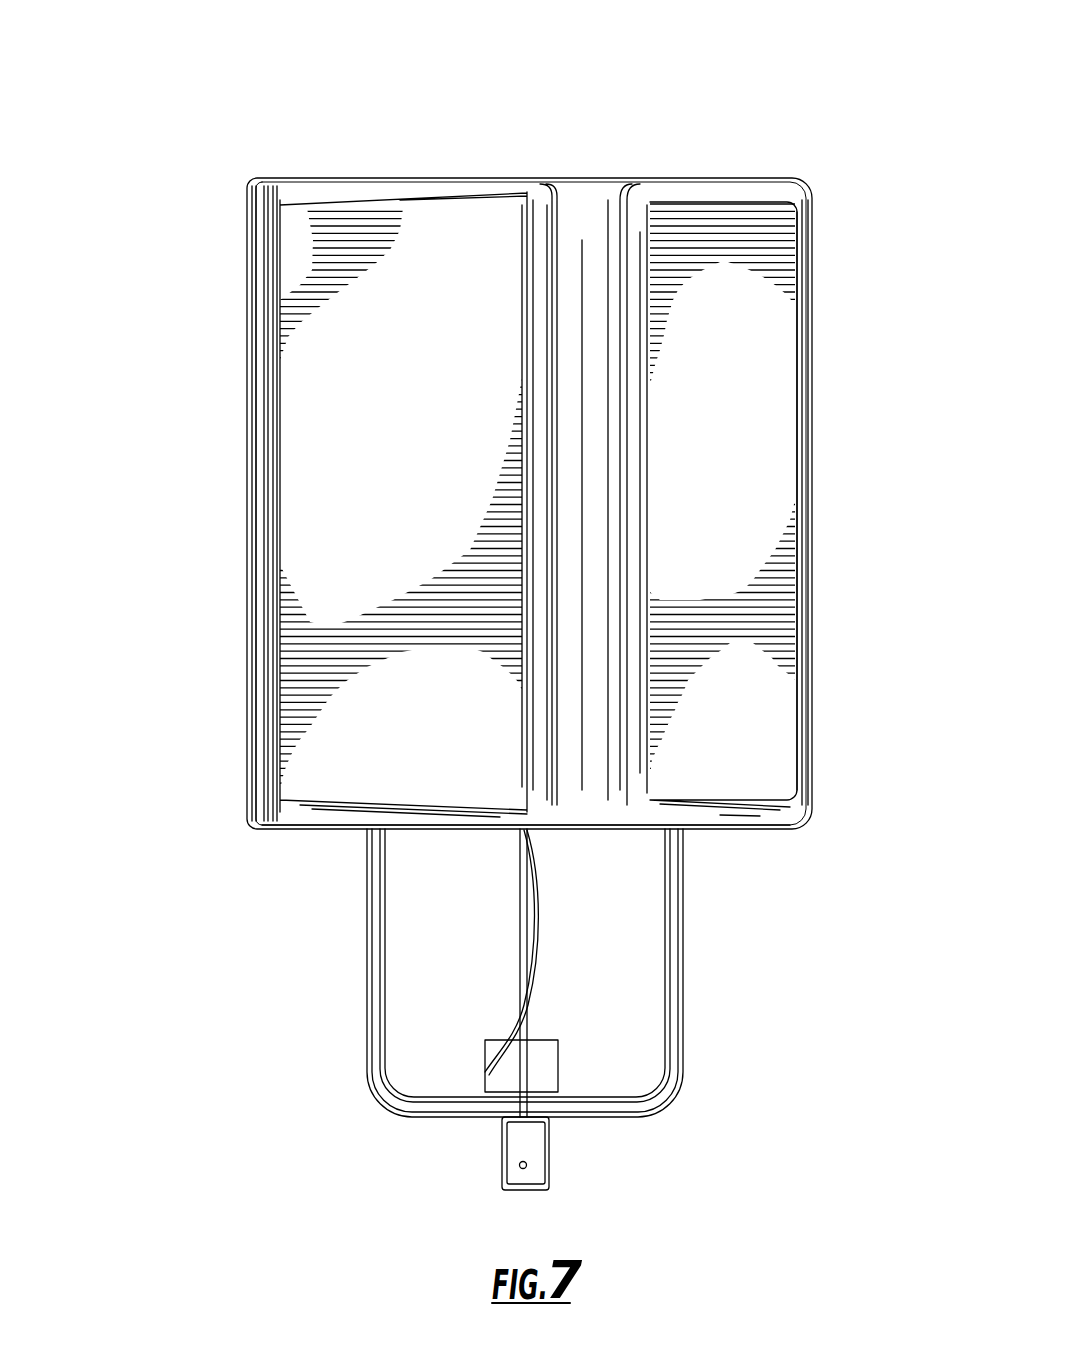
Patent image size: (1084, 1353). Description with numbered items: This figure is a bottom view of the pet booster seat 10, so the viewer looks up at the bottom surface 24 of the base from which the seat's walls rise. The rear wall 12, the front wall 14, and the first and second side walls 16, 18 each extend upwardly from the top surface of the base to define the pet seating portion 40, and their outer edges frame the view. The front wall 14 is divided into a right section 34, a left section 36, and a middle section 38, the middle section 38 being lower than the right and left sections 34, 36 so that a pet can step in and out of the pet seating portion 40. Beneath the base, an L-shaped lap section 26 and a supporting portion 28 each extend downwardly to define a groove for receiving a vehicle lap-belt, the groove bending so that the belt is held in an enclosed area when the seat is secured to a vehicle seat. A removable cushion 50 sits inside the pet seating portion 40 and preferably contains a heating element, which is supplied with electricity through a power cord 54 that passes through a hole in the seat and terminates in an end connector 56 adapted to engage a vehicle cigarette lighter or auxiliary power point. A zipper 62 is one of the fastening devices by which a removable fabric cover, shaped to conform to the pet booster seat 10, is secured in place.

The pet booster seat 10 is at (172, 114).
The pet seating portion 40 is at (128, 331).
The rear wall 12 is at (247, 487).
The front wall 14 is at (812, 485).
The first side wall 16 is at (467, 178).
The bottom surface 24 is at (590, 222).
The L-shaped lap section 26 is at (373, 215).
The supporting portion 28 is at (750, 212).
The right section 34 is at (815, 748).
The left section 36 is at (812, 281).
The middle section 38 is at (812, 541).
The zipper 62 is at (265, 722).
The second side wall 18 is at (712, 831).
The removable cushion 50 is at (685, 1028).
The power cord 54 is at (533, 953).
The end connector 56 is at (549, 1142).